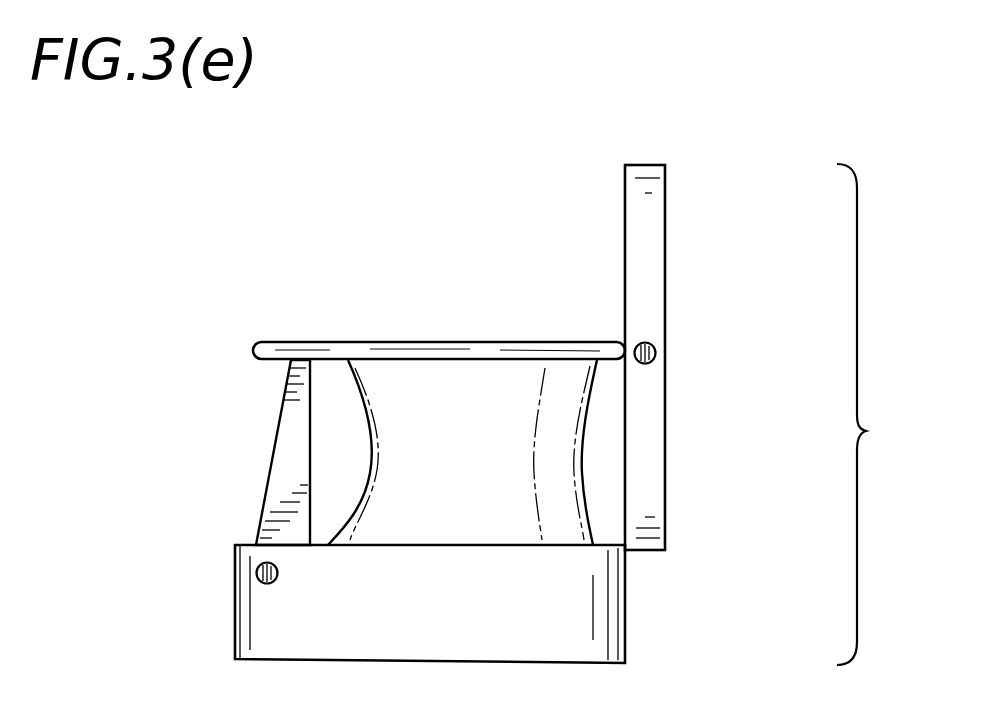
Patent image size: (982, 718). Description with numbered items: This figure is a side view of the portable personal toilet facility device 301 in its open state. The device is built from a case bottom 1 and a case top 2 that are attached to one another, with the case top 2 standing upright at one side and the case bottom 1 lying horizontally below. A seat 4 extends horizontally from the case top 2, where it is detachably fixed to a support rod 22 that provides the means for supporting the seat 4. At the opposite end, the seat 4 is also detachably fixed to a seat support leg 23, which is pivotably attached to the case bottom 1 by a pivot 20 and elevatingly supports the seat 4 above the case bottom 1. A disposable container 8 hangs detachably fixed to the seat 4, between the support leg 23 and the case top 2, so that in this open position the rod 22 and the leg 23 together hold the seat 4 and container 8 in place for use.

The case bottom 1 is at (607, 618).
The case top 2 is at (653, 213).
The seat 4 is at (318, 345).
The disposable container 8 is at (563, 432).
The pivot 20 is at (258, 566).
The support rod 22 is at (648, 293).
The seat support leg 23 is at (290, 414).
The portable personal toilet facility device 301 is at (883, 414).